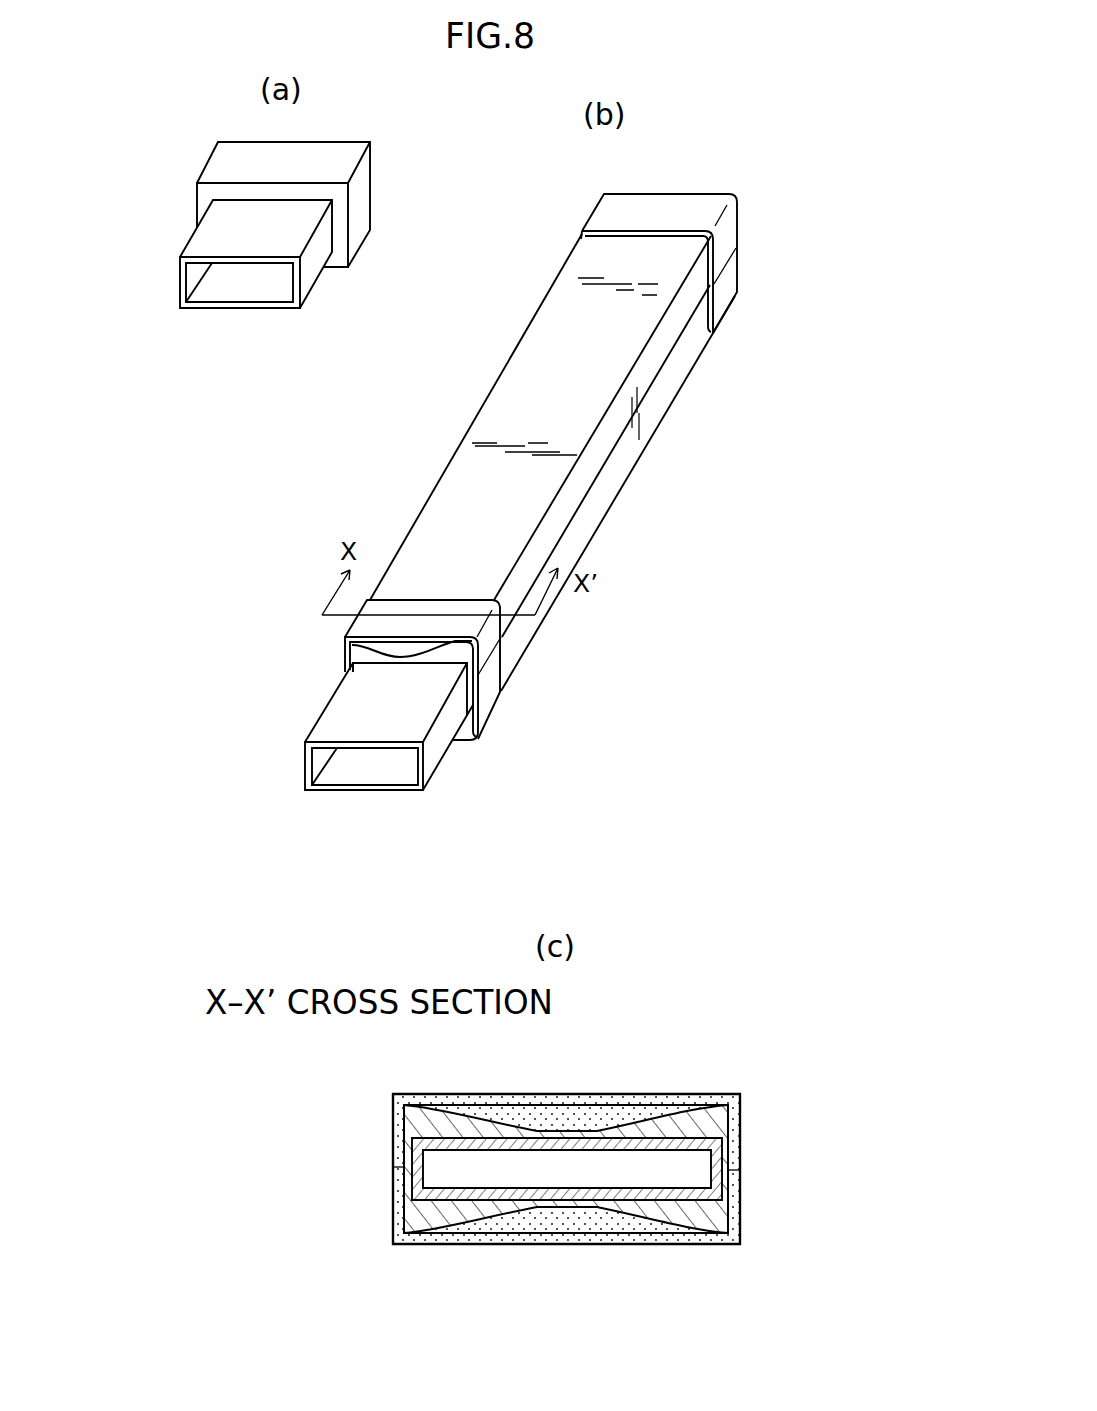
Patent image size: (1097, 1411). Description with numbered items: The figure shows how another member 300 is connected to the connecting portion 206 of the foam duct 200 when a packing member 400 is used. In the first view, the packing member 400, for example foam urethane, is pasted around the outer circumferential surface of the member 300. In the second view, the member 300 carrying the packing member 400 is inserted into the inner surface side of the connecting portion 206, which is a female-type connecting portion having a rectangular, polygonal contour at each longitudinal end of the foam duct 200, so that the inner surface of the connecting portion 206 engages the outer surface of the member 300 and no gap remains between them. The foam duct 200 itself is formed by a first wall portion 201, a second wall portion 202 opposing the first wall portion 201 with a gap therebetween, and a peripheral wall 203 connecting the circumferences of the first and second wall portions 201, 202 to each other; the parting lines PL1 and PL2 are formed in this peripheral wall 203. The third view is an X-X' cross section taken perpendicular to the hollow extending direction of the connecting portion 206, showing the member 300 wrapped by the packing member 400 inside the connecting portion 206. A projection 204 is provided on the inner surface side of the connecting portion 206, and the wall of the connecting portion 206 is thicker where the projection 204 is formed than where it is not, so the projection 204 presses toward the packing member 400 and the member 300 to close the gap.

The foam duct 200 is at (793, 359).
The first wall portion 201 is at (557, 333).
The second wall portion 202 is at (543, 618).
The peripheral wall 203 is at (613, 470).
The projection 204 is at (412, 643).
The connecting portion 206 is at (684, 205).
The member 300 is at (198, 235).
The packing member 400 is at (228, 168).
The parting line PL1 is at (393, 1167).
The parting line PL2 is at (485, 677).